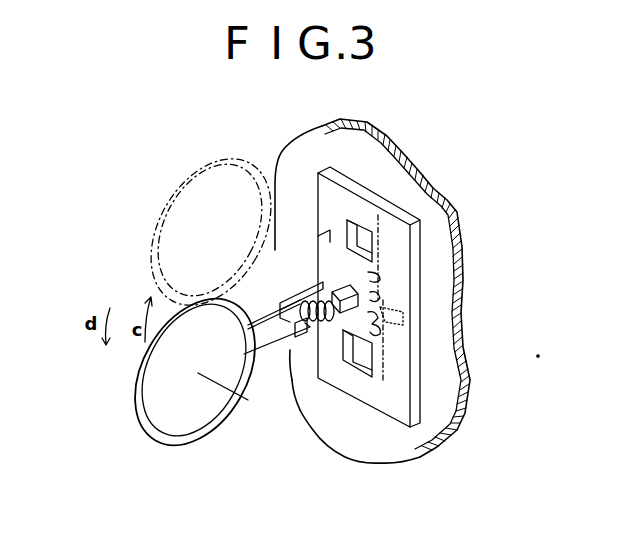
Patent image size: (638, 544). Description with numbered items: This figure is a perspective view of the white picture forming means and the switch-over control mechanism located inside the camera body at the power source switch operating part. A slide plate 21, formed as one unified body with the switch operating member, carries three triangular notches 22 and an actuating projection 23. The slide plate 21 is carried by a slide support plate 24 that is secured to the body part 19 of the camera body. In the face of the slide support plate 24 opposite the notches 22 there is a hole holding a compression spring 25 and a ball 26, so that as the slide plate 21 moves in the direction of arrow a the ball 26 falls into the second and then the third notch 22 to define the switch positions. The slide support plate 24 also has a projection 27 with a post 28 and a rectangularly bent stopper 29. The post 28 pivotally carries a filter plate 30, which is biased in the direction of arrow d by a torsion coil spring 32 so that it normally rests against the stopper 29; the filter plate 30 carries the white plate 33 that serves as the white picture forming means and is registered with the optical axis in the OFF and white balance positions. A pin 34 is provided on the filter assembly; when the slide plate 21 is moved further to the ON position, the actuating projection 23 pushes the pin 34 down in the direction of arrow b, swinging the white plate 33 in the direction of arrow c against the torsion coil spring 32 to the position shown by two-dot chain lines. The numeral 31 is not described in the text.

The body part 19 is at (438, 407).
The slide plate 21 is at (375, 300).
The triangular notches 22 is at (380, 278).
The projection 23 is at (298, 188).
The slide support plate 24 is at (390, 432).
The compression spring 25 is at (400, 312).
The ball 26 is at (378, 298).
The projection 27 is at (303, 287).
The post 28 is at (300, 408).
The stopper 29 is at (295, 366).
The filter plate 30 is at (266, 340).
The pivot 31 is at (326, 222).
The torsion coil spring 32 is at (238, 281).
The white plate 33 is at (193, 407).
The pin 34 is at (314, 338).